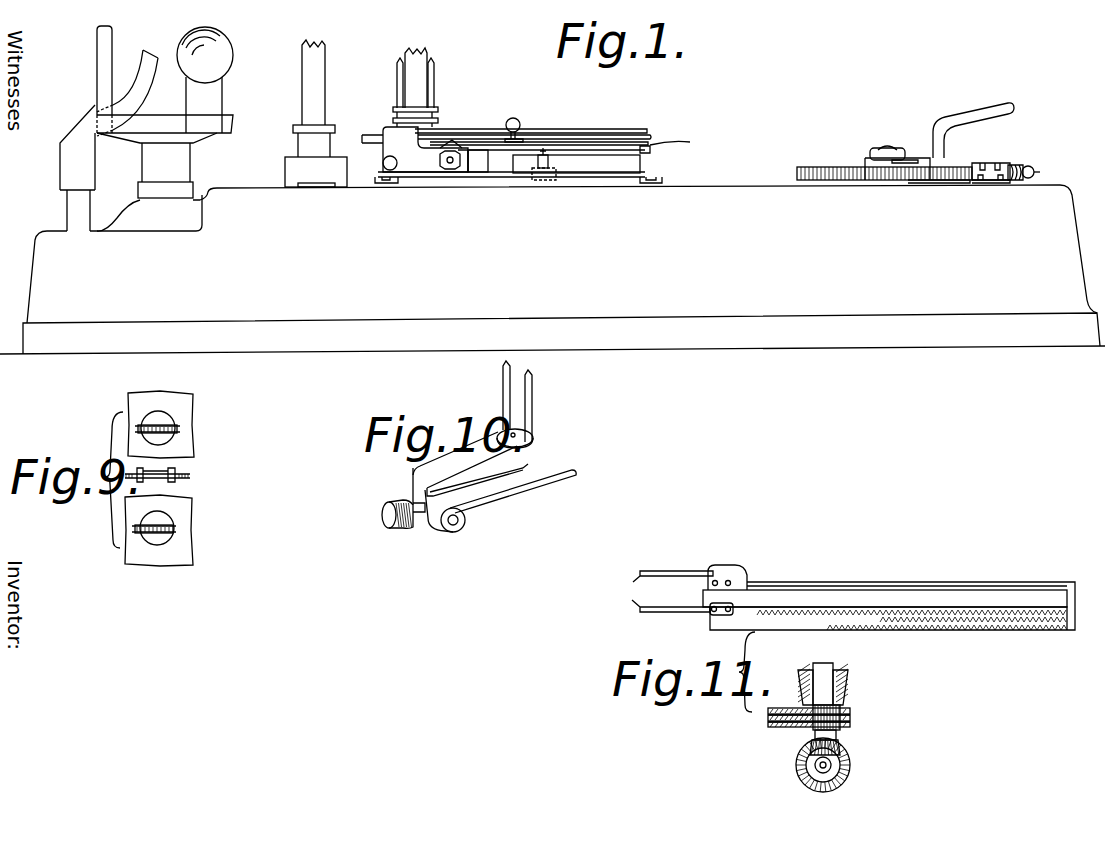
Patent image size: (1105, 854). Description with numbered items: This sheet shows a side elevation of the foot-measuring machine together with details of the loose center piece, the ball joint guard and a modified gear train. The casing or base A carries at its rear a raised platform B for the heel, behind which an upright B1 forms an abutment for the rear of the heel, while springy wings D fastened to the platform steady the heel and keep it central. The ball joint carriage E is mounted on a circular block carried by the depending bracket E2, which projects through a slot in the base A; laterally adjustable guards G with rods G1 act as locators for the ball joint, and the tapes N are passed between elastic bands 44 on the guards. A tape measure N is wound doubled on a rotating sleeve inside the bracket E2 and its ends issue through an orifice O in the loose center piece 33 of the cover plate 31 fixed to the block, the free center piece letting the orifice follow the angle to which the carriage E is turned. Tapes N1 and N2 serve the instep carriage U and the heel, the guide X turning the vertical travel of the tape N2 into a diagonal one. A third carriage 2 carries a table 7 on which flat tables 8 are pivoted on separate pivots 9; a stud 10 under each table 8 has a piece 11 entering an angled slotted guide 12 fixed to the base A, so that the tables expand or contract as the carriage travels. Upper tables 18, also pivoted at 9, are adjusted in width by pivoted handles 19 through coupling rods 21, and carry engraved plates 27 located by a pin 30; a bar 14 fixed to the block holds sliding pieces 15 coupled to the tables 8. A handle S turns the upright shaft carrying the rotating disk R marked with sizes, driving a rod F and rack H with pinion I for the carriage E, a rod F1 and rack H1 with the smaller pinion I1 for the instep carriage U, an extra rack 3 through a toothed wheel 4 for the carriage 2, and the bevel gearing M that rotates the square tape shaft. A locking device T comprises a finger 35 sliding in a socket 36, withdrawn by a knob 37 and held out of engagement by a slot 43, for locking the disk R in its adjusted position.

In FIG. 1, the casing or base A is at (561, 269).
In FIG. 1, the guide X is at (77, 168).
In FIG. 1, the raised platform B is at (225, 125).
In FIG. 1, the upright B1 is at (105, 68).
In FIG. 1, the tape measure N is at (415, 50).
In FIG. 1, the tape N1 is at (312, 45).
In FIG. 1, the tape N2 is at (150, 50).
In FIG. 1, the wings D is at (213, 52).
In FIG. 1, the instep carriage U is at (300, 160).
In FIG. 1, the sliding carriage E is at (480, 165).
In FIG. 1, the depending bracket E2 is at (405, 180).
In FIG. 1, the guards G is at (432, 96).
In FIG. 10, the guards G is at (506, 400).
In FIG. 10, the rods G1 is at (513, 494).
In FIG. 1, the pivots 9 is at (383, 164).
In FIG. 10, the pivots 9 is at (408, 507).
In FIG. 1, the elastic bands 44 is at (410, 108).
In FIG. 1, the pin 30 is at (628, 128).
In FIG. 1, the plates 27 is at (650, 131).
In FIG. 1, the tables 18 is at (658, 139).
In FIG. 1, the flat tables 8 is at (668, 141).
In FIG. 1, the table 7 is at (670, 153).
In FIG. 1, the coupling rods 21 is at (438, 142).
In FIG. 1, the pieces 15 is at (460, 147).
In FIG. 1, the pivoted handles 19 is at (482, 135).
In FIG. 1, the bar 14 is at (470, 160).
In FIG. 1, the third sliding piece or carriage 2 is at (638, 165).
In FIG. 1, the stud 10 is at (550, 162).
In FIG. 1, the piece 11 is at (538, 180).
In FIG. 1, the slotted guide 12 is at (610, 183).
In FIG. 1, the rotating disk R is at (822, 161).
In FIG. 1, the handle S is at (988, 112).
In FIG. 1, the locking device T is at (983, 182).
In FIG. 1, the finger or locking arm 35 is at (975, 163).
In FIG. 1, the slot 43 is at (1000, 165).
In FIG. 1, the socket 36 is at (1022, 166).
In FIG. 1, the knob 37 is at (1049, 171).
In FIG. 9, the cover plate 31 is at (180, 541).
In FIG. 9, the loose center piece 33 is at (167, 475).
In FIG. 9, the orifice O is at (157, 523).
In FIG. 11, the orifice O is at (830, 673).
In FIG. 11, the rod F is at (667, 609).
In FIG. 11, the rod F1 is at (673, 576).
In FIG. 11, the extra rack 3 is at (777, 711).
In FIG. 11, the rack H is at (791, 727).
In FIG. 11, the rack H1 is at (768, 717).
In FIG. 11, the toothed wheel 4 is at (840, 710).
In FIG. 11, the pinion I is at (850, 725).
In FIG. 11, the pinion I1 is at (850, 717).
In FIG. 11, the bevel gearing M is at (838, 741).